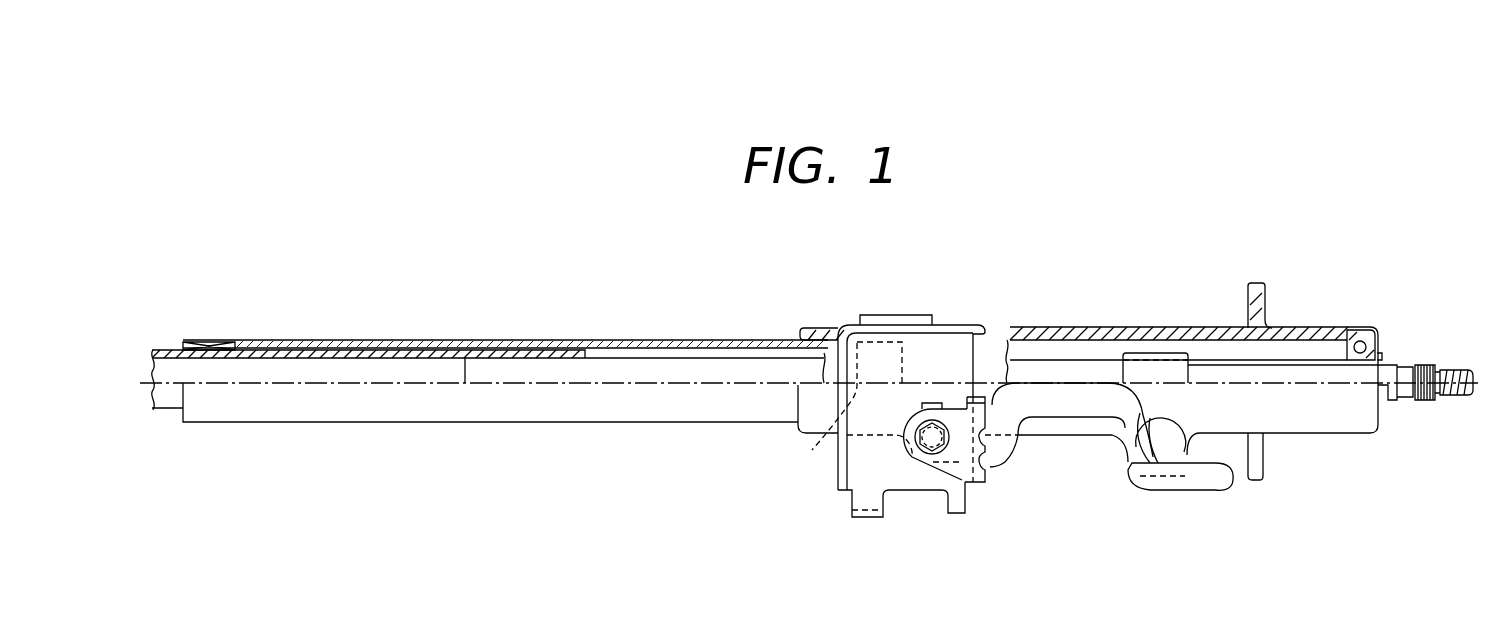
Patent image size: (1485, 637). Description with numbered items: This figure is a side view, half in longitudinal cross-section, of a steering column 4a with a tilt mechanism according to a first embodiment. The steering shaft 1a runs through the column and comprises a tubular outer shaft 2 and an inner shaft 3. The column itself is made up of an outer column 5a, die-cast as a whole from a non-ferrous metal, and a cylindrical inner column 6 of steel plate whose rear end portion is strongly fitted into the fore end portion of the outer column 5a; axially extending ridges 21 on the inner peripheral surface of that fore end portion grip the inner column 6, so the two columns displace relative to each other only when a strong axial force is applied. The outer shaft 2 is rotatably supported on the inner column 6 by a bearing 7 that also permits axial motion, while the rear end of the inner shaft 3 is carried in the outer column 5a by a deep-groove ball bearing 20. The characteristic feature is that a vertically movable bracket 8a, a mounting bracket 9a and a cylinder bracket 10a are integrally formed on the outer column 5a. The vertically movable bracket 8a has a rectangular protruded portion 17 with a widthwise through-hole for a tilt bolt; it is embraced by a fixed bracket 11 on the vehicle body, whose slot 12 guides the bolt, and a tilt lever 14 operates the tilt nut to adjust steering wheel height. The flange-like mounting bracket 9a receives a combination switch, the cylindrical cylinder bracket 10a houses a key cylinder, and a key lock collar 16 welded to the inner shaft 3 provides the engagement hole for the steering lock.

The steering shaft 1a is at (483, 368).
The outer shaft 2 is at (320, 355).
The inner shaft 3 is at (1427, 365).
The steering column 4a is at (1112, 328).
The outer column 5a is at (1030, 330).
The inner column 6 is at (633, 343).
The bearing 7 is at (222, 340).
The vertically movable bracket 8a is at (900, 458).
The mounting bracket 9a is at (1250, 303).
The cylinder bracket 10a is at (1167, 447).
The fixed bracket 11 is at (943, 352).
The slot 12 is at (937, 480).
The tilt lever 14 is at (1220, 483).
The key lock collar 16 is at (1168, 368).
The protruded portion 17 is at (975, 483).
The ball bearing 20 is at (1358, 335).
The ridges 21 is at (812, 450).